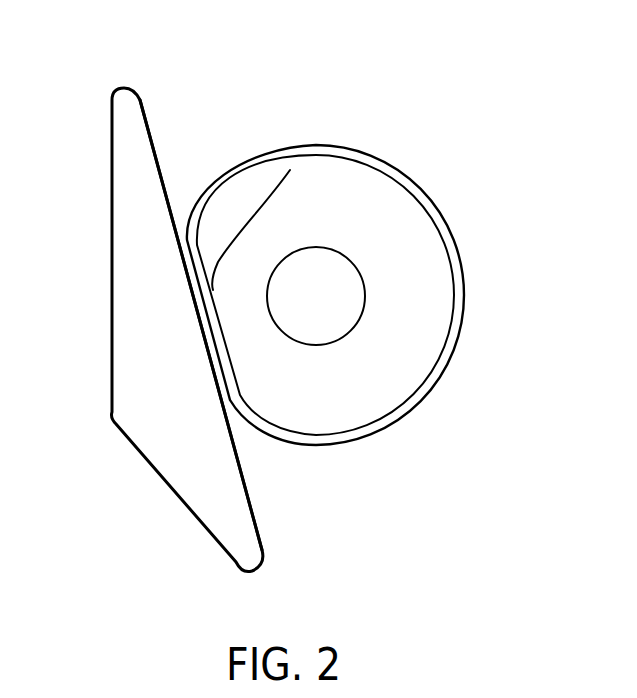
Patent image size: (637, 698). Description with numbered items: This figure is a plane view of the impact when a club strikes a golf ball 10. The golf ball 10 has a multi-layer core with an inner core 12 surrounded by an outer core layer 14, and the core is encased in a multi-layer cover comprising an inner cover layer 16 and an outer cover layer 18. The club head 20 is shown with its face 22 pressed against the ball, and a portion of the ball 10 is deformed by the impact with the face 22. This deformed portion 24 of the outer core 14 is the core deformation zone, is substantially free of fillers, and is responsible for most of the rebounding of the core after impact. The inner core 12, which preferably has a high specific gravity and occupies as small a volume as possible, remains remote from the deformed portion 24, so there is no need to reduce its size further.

The golf ball 10 is at (460, 134).
The inner core 12 is at (316, 296).
The outer core layer 14 is at (366, 397).
The inner cover layer 16 is at (443, 362).
The outer cover layer 18 is at (401, 295).
The club head 20 is at (110, 253).
The face 22 is at (150, 130).
The deformed portion 24 is at (290, 170).